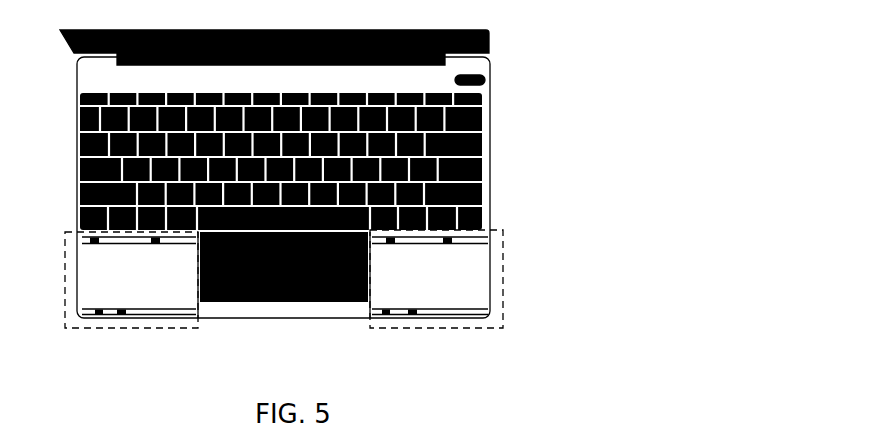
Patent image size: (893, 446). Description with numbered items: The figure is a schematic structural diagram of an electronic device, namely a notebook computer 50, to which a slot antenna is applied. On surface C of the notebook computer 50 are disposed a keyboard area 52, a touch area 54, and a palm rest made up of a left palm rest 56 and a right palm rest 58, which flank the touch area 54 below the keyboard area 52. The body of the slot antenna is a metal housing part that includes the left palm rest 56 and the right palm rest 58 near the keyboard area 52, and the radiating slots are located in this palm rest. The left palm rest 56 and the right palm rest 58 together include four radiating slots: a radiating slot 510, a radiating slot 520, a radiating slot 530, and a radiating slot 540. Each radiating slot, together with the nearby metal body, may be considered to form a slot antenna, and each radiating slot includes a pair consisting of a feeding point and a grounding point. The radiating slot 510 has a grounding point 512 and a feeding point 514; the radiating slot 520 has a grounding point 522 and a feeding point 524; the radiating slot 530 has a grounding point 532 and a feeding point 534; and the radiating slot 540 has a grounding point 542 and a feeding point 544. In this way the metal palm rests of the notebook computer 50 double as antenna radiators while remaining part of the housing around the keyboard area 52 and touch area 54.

The notebook computer 50 is at (74, 77).
The keyboard area 52 is at (485, 127).
The touch area 54 is at (262, 306).
The left palm rest 56 is at (182, 328).
The right palm rest 58 is at (505, 272).
The radiating slot 510 is at (483, 240).
The grounding point 512 is at (393, 243).
The feeding point 514 is at (449, 243).
The radiating slot 520 is at (480, 313).
The grounding point 522 is at (386, 312).
The feeding point 524 is at (412, 312).
The radiating slot 530 is at (84, 241).
The grounding point 532 is at (99, 243).
The feeding point 534 is at (175, 251).
The radiating slot 540 is at (84, 312).
The grounding point 542 is at (100, 312).
The feeding point 544 is at (122, 312).